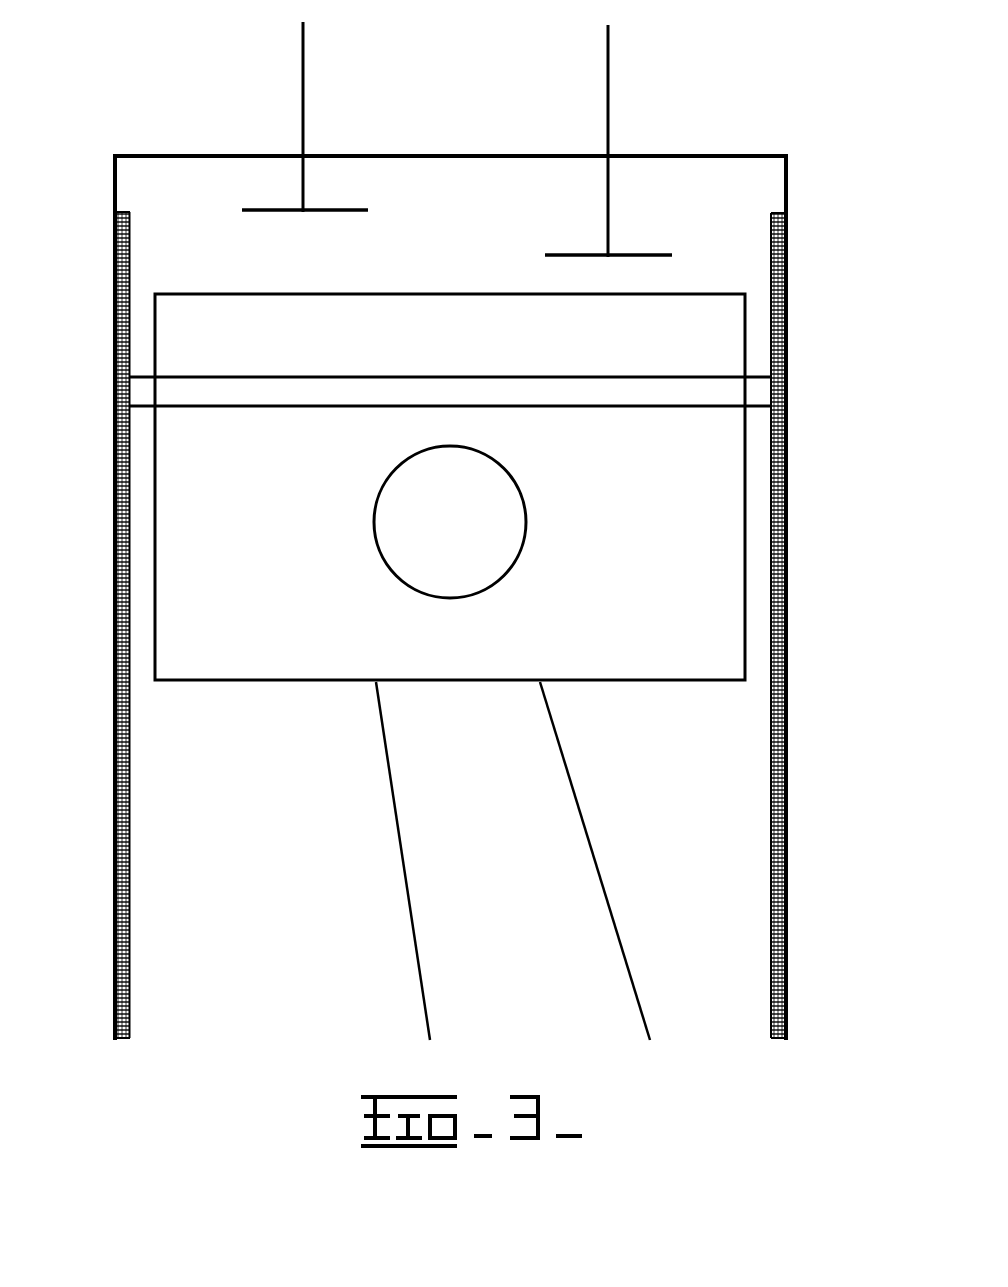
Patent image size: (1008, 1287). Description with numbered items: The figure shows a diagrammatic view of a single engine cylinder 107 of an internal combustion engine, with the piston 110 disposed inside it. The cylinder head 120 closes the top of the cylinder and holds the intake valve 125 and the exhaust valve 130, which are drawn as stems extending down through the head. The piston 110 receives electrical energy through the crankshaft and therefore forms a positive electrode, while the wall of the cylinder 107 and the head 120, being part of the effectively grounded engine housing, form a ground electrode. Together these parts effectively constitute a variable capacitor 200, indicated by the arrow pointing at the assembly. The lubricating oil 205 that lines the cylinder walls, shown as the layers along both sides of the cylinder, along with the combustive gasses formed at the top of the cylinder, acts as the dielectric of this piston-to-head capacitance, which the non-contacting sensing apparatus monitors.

The engine cylinder 107 is at (114, 660).
The piston 110 is at (735, 478).
The cylinder head 120 is at (712, 156).
The intake valve 125 is at (305, 80).
The exhaust valve 130 is at (610, 83).
The variable capacitor 200 is at (810, 248).
The lubricating oil 205 is at (788, 778).